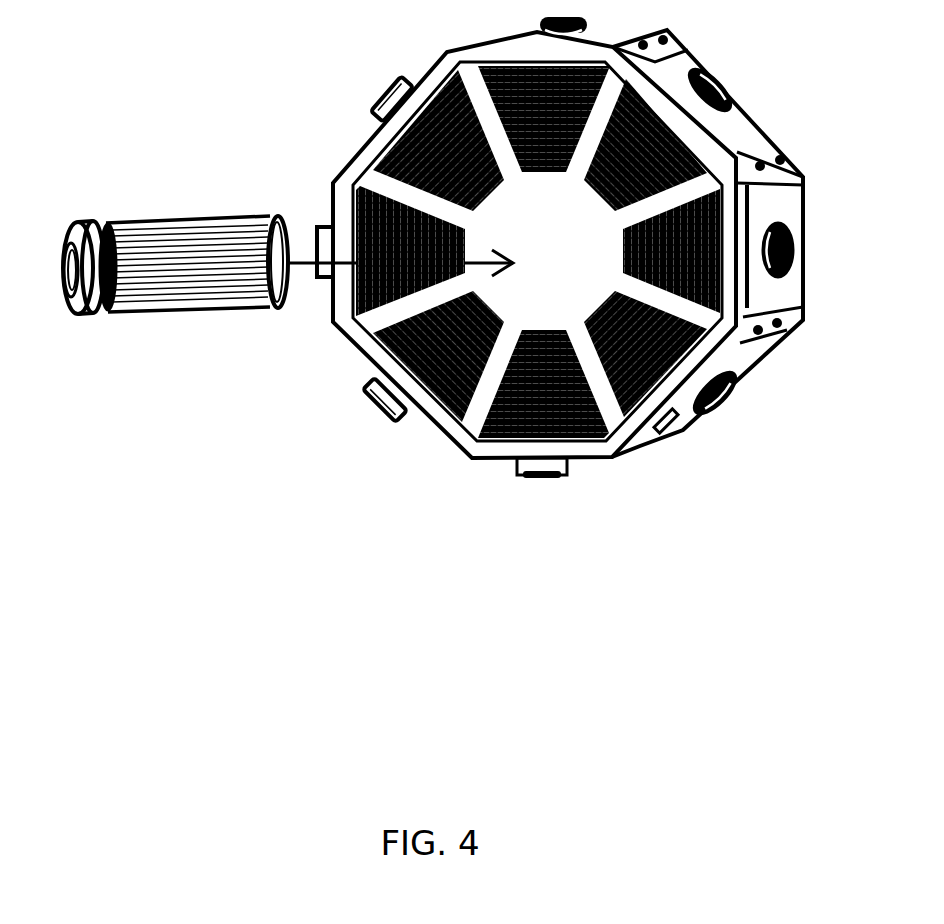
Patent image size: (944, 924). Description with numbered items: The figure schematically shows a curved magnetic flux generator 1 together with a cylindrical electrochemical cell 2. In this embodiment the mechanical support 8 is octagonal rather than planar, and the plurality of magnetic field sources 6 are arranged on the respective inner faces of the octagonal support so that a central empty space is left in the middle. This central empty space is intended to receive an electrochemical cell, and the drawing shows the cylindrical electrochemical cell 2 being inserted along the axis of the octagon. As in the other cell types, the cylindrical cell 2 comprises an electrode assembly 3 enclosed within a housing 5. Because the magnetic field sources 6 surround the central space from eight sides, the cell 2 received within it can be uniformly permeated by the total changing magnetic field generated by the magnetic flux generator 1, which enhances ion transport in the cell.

The magnetic flux generator 1 is at (390, 485).
The cylindrical electrochemical cell 2 is at (145, 348).
The electrode assembly 3 is at (182, 235).
The housing 5 is at (103, 227).
The magnetic field sources 6 is at (545, 172).
The mechanical support 8 is at (752, 135).